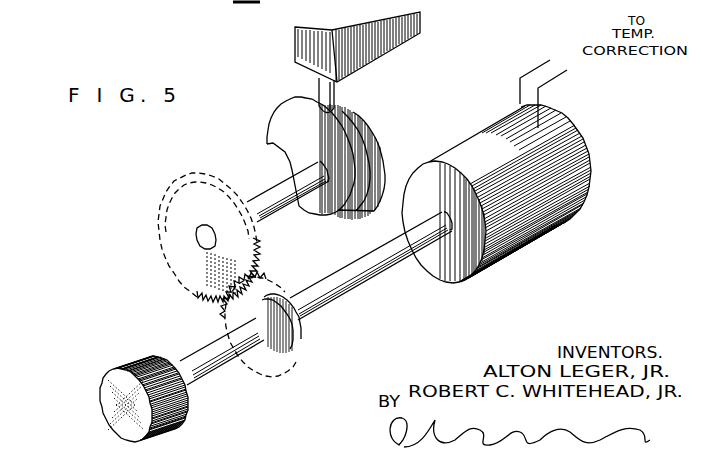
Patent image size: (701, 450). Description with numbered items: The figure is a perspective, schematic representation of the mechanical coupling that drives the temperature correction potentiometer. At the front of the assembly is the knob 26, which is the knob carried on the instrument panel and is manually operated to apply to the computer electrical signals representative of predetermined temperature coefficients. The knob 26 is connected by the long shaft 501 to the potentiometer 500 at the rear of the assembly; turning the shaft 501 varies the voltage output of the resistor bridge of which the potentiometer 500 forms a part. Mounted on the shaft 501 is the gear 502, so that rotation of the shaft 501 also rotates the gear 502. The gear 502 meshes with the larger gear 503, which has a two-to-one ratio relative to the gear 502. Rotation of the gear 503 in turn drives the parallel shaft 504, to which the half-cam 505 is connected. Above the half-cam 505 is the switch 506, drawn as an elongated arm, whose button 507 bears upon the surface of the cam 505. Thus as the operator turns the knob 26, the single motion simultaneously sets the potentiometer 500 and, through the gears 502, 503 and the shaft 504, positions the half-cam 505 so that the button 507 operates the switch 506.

The knob 26 is at (99, 397).
The potentiometer 500 is at (545, 225).
The shaft 501 is at (372, 286).
The gear 502 is at (280, 358).
The gear 503 is at (176, 193).
The shaft 504 is at (282, 188).
The half-cam 505 is at (285, 128).
The switch 506 is at (388, 34).
The button 507 is at (318, 88).